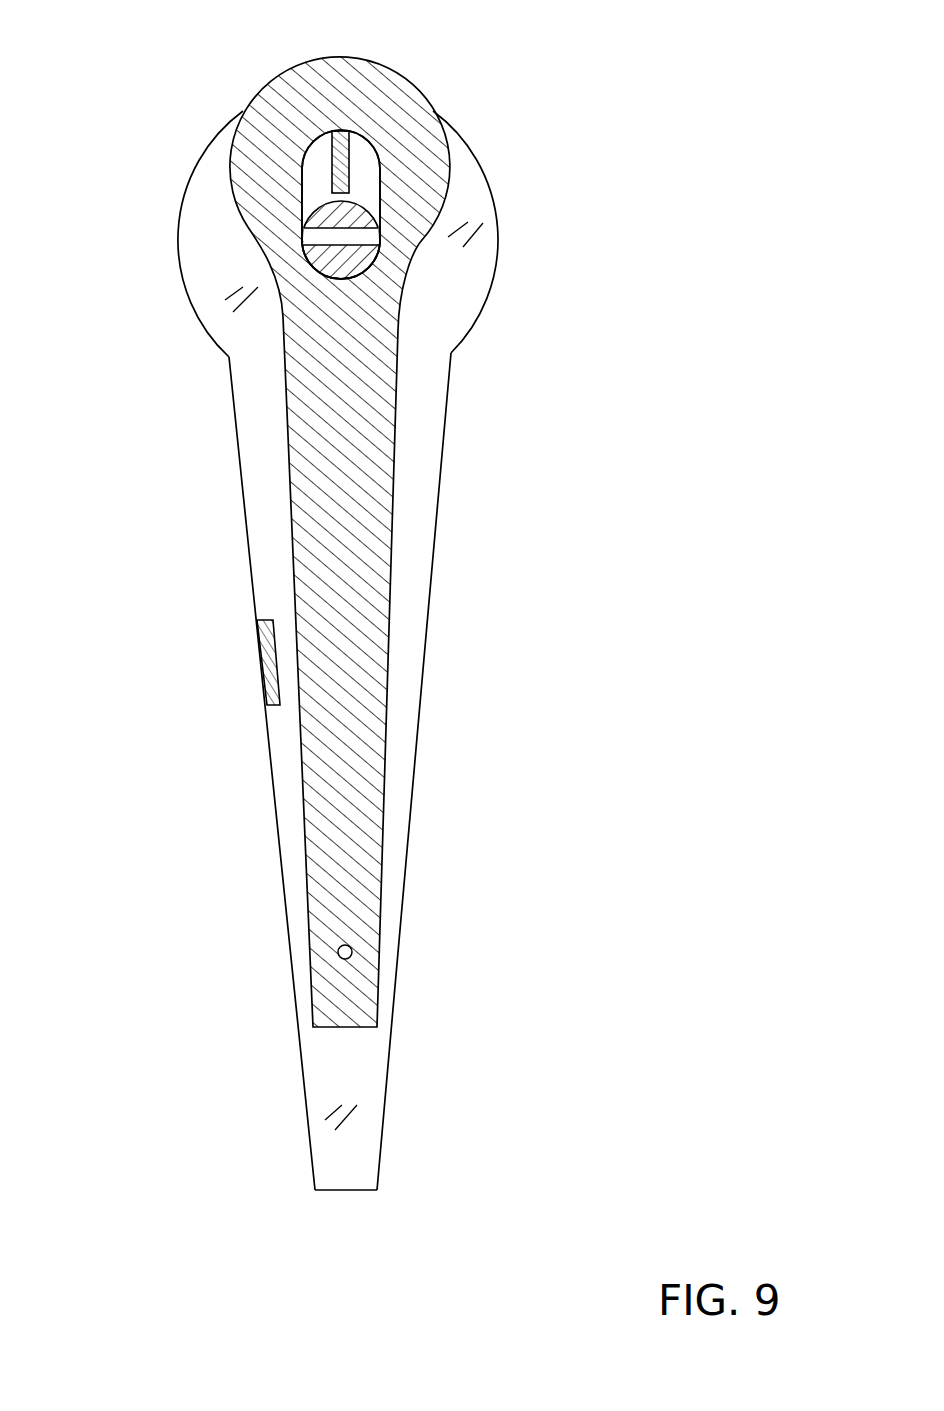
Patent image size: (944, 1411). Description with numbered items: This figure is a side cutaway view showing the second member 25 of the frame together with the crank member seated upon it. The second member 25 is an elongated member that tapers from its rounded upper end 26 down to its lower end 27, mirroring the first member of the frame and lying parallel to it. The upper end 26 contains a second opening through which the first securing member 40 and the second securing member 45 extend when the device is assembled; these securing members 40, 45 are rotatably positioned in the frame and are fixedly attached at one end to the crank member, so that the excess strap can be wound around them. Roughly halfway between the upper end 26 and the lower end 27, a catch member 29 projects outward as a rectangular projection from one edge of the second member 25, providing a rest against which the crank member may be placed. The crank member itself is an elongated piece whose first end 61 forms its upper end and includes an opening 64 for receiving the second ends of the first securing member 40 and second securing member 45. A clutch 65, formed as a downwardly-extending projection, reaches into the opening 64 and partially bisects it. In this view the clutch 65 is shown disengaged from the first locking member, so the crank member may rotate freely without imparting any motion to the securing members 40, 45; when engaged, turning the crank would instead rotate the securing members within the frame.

The first end 61 is at (350, 78).
The upper end 26 is at (220, 143).
The clutch 65 is at (342, 166).
The first securing member 40 is at (358, 208).
The opening 64 is at (302, 195).
The second securing member 45 is at (350, 263).
The second member 25 is at (425, 666).
The catch member 29 is at (260, 650).
The lower end 27 is at (352, 1165).